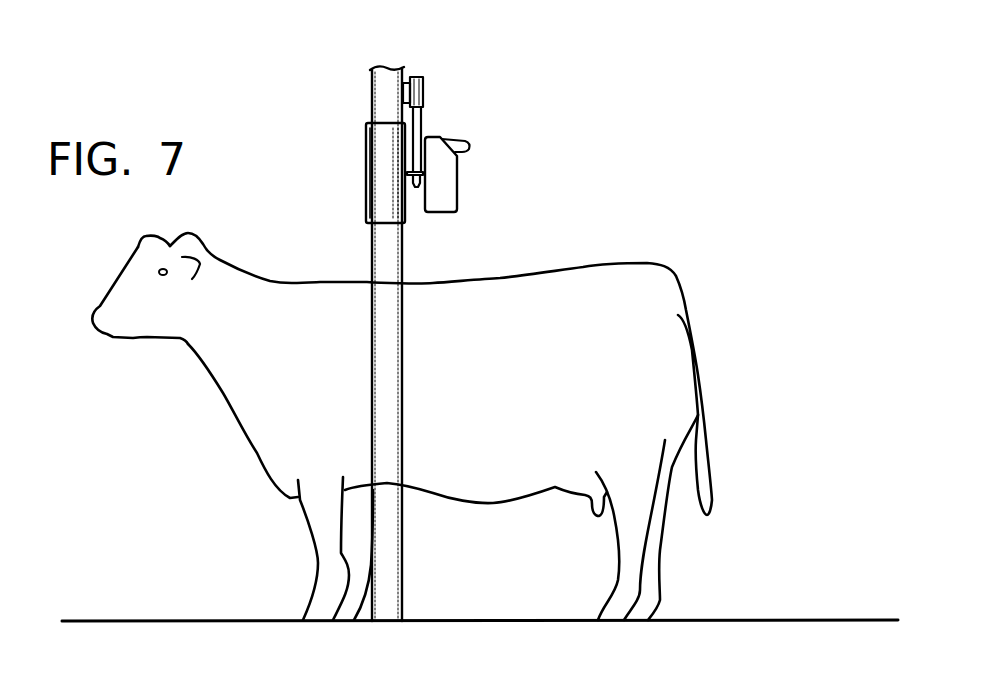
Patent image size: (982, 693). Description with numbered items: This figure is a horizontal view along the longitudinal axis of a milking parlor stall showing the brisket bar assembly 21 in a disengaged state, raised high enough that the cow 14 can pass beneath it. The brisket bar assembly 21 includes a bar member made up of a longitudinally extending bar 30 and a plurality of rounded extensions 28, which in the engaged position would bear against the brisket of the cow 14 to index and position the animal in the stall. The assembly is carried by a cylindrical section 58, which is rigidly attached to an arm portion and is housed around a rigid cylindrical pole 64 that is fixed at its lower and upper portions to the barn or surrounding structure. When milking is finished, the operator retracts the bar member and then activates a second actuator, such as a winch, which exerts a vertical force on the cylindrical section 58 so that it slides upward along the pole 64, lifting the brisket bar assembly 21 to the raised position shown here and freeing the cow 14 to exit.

The cow 14 is at (472, 302).
The brisket bar assembly 21 is at (462, 111).
The rounded extensions 28 is at (465, 147).
The longitudinally extending bar 30 is at (448, 185).
The cylindrical section 58 is at (378, 165).
The rigid cylindrical pole 64 is at (383, 252).